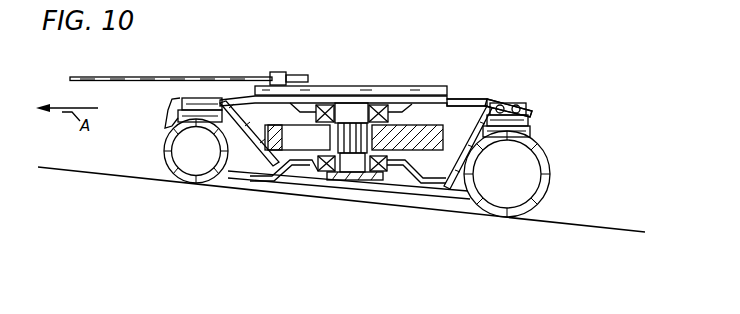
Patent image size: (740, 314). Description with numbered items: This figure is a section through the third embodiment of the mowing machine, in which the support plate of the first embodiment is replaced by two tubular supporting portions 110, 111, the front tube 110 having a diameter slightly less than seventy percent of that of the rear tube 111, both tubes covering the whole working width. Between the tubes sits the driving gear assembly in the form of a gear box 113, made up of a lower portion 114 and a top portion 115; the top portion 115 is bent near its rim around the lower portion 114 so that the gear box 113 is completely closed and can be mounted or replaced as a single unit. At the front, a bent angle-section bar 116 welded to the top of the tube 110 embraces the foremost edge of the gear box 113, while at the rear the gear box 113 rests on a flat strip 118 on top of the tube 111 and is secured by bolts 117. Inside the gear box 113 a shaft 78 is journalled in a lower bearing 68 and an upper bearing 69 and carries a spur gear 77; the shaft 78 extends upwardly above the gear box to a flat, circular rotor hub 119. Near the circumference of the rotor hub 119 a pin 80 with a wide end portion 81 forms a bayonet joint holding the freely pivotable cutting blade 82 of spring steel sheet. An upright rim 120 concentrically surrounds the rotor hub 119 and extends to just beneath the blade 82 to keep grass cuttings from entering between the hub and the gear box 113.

The bearing 68 is at (337, 191).
The bearing 69 is at (333, 106).
The spur gear 77 is at (338, 170).
The shaft 78 is at (351, 111).
The pin 80 is at (269, 66).
The wide end portion 81 is at (303, 62).
The cutting member or blade 82 is at (171, 65).
The tubular supporting portion 110 is at (169, 151).
The tubular supporting portion 111 is at (550, 178).
The gear box 113 is at (384, 92).
The lower portion 114 is at (349, 203).
The top portion 115 is at (500, 89).
The angle-section bar 116 is at (172, 111).
The bolts 117 is at (537, 104).
The flat strip 118 is at (537, 126).
The rotor hub 119 is at (351, 72).
The upright rim 120 is at (467, 77).